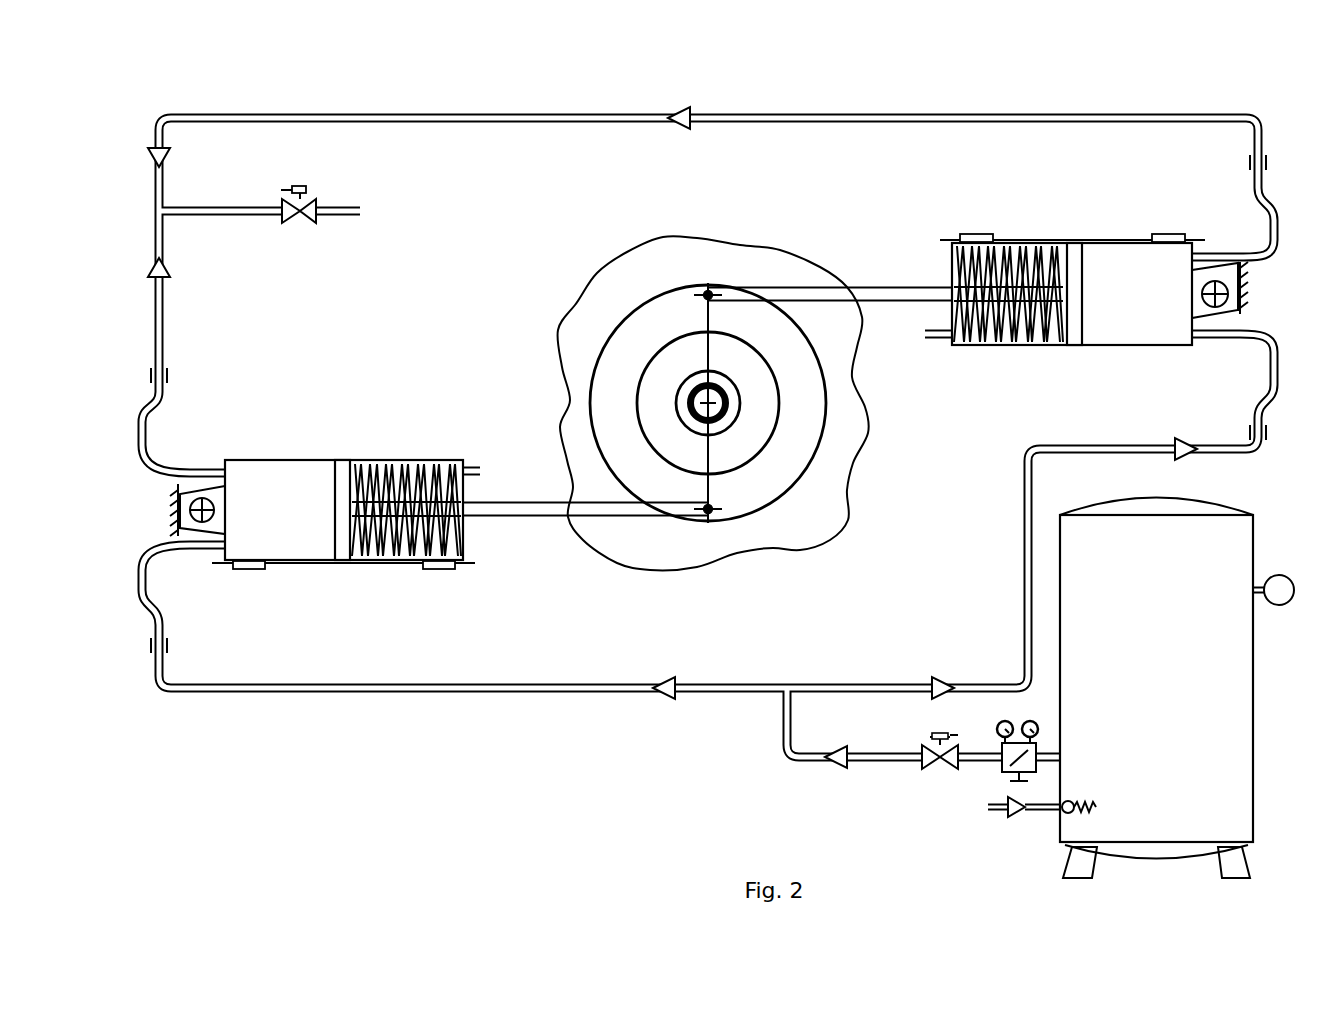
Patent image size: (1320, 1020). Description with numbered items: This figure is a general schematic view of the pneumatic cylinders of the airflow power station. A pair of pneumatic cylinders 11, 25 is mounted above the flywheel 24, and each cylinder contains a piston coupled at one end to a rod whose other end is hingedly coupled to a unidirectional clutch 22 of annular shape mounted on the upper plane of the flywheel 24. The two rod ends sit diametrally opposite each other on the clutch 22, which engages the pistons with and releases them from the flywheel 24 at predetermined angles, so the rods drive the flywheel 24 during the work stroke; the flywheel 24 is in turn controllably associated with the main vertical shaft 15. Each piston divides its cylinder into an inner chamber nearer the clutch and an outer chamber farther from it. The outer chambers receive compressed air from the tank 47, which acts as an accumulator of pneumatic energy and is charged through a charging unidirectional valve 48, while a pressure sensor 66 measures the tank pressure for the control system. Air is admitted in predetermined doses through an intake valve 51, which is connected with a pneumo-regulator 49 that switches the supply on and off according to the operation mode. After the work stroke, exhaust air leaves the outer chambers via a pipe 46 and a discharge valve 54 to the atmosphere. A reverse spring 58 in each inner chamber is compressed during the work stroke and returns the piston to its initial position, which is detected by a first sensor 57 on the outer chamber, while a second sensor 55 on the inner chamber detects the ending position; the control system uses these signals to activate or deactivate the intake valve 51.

The pneumatic cylinder 11 is at (322, 351).
The main vertical shaft 15 is at (707, 383).
The unidirectional clutch 22 is at (627, 350).
The flywheel 24 is at (580, 348).
The pneumatic cylinder 25 is at (1140, 265).
The pipe 46 is at (162, 467).
The tank 47 is at (1145, 603).
The charging unidirectional valve 48 is at (1040, 810).
The pneumo-regulator 49 is at (1018, 755).
The intake valve 51 is at (920, 763).
The discharge valve 54 is at (287, 214).
The second sensor 55 is at (437, 565).
The first sensor 57 is at (247, 562).
The reverse spring 58 is at (370, 548).
The pressure sensor 66 is at (1258, 592).